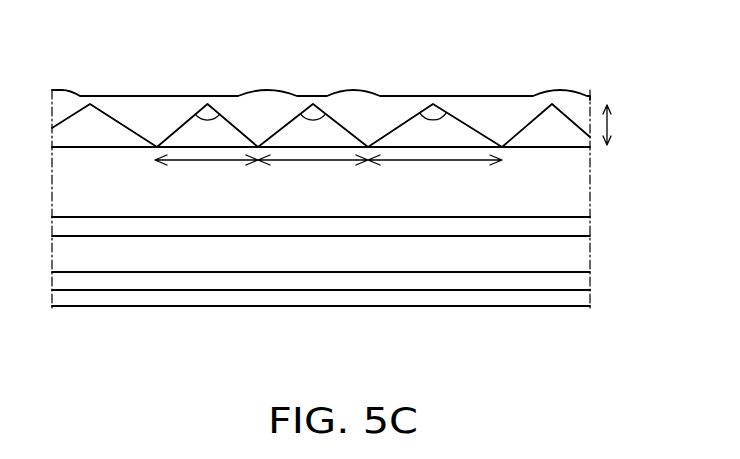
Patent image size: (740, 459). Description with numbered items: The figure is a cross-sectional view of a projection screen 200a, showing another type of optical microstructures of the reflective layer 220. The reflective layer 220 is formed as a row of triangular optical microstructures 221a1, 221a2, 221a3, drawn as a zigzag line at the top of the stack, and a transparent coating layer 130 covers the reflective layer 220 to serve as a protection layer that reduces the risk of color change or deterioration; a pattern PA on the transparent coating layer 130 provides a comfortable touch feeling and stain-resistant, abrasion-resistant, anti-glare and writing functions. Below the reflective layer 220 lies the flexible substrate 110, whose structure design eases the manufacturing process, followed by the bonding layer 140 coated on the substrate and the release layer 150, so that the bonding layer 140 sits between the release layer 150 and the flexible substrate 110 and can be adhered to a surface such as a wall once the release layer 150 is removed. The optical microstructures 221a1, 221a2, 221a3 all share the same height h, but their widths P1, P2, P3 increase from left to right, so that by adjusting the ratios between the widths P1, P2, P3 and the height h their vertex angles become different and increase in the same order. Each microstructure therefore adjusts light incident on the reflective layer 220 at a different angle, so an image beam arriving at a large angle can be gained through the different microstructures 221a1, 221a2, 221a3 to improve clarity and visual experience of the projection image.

The projection screen 200a is at (590, 341).
The transparent coating layer 130 is at (497, 117).
The reflective layer 220 is at (565, 137).
The optical microstructure 221a1 is at (183, 130).
The optical microstructure 221a2 is at (286, 128).
The optical microstructure 221a3 is at (410, 127).
The flexible substrate 110 is at (580, 204).
The bonding layer 140 is at (582, 232).
The release layer 150 is at (582, 257).
The pattern PA is at (354, 77).
The height h is at (616, 125).
The width P1 is at (206, 170).
The width P2 is at (313, 170).
The width P3 is at (435, 170).